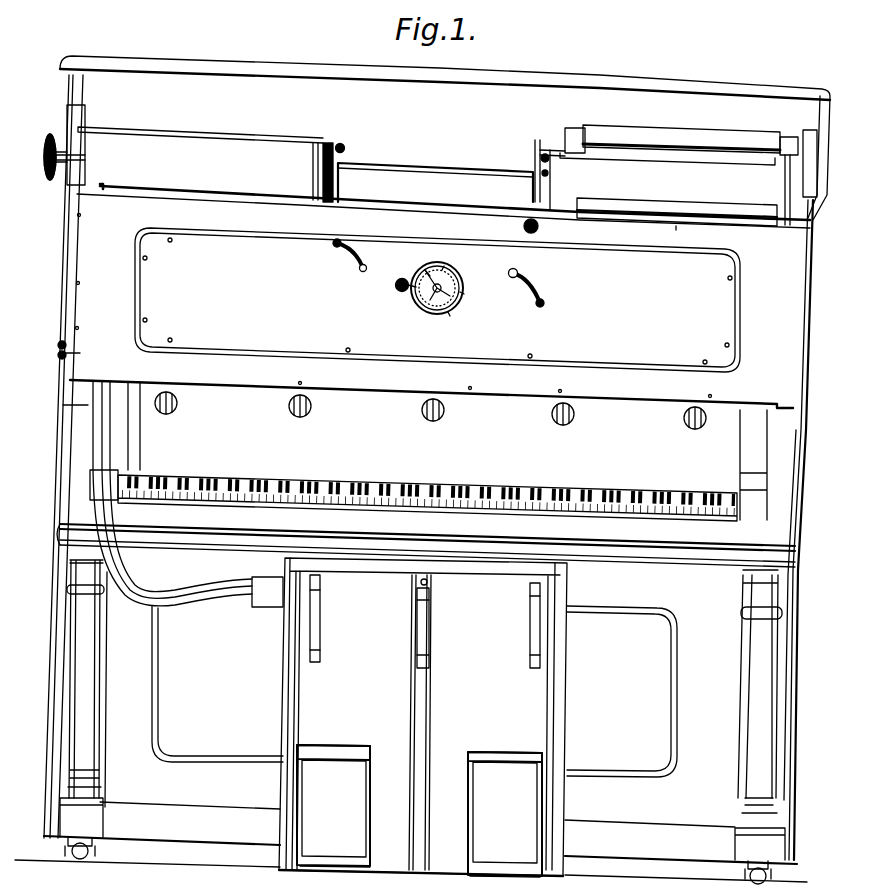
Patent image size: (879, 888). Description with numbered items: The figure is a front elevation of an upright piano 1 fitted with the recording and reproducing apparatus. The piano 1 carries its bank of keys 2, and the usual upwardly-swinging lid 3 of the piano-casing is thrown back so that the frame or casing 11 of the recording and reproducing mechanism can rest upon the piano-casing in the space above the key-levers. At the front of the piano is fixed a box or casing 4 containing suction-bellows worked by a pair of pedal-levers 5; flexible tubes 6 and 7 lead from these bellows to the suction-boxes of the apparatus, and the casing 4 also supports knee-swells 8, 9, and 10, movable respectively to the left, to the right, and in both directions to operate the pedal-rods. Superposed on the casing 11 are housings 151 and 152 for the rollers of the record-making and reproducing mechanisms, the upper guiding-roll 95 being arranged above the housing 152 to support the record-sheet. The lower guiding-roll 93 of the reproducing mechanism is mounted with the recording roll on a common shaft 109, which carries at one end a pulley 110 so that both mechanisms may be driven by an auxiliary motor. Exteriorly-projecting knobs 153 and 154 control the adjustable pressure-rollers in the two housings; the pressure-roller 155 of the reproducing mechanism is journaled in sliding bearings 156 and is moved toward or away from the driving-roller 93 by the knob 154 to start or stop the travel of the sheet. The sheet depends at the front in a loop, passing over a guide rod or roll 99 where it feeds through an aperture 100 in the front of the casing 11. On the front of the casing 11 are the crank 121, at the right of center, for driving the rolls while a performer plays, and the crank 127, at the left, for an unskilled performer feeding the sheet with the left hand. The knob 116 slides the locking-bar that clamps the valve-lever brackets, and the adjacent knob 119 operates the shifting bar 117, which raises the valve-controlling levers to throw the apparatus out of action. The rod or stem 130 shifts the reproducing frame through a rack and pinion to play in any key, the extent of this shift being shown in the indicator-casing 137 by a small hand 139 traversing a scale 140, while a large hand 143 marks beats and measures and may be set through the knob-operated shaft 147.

The piano 1 is at (217, 684).
The bank of keys 2 is at (283, 503).
The lid 3 is at (439, 152).
The box or casing 4 is at (522, 700).
The pedal-levers 5 is at (419, 810).
The flexible tube 6 is at (148, 608).
The flexible tube 7 is at (163, 593).
The knee-swell 8 is at (321, 629).
The knee-swell 9 is at (530, 634).
The knee-swell 10 is at (430, 633).
The frame or casing 11 is at (437, 300).
The lower guiding-roll 93 is at (698, 212).
The upper guiding-roll 95 is at (684, 125).
The guide rod or roll 99 is at (676, 228).
The aperture 100 is at (640, 196).
The shaft 109 is at (86, 157).
The pulley 110 is at (57, 148).
The operating knob or handle 116 is at (82, 356).
The shifting bar 117 is at (444, 266).
The operating knob or lever 119 is at (78, 350).
The operating crank or handle 121 is at (544, 300).
The operating crank or handle 127 is at (334, 244).
The operating rod or stem 130 is at (537, 233).
The indicator-casing 137 is at (450, 314).
The hand or pointer 139 is at (446, 274).
The scale 140 is at (463, 294).
The indicating hand or pointer 143 is at (431, 292).
The knob-operated shaft 147 is at (398, 286).
The housing 151 is at (270, 165).
The housing 152 is at (592, 160).
The knob or operating device 153 is at (345, 147).
The knob 154 is at (536, 165).
The pressure-roller 155 is at (368, 877).
The bearings 156 is at (543, 882).